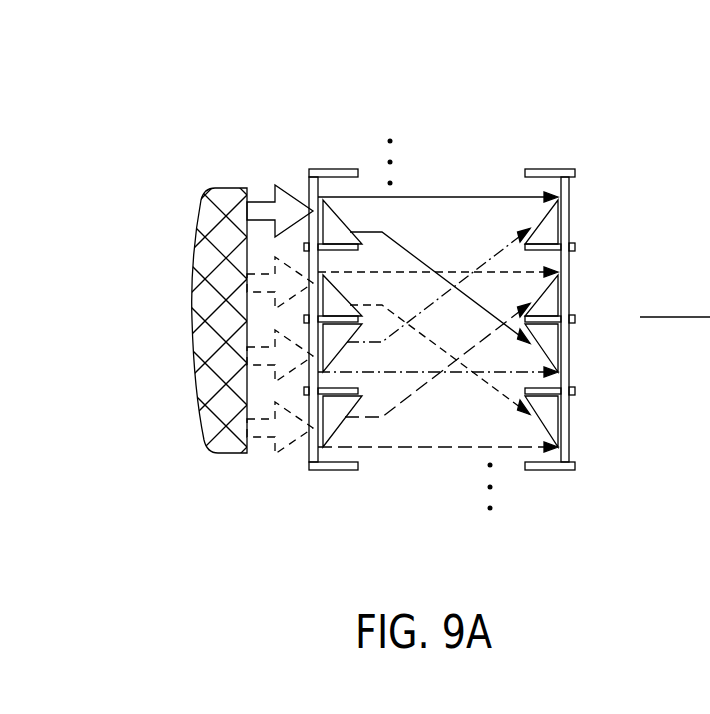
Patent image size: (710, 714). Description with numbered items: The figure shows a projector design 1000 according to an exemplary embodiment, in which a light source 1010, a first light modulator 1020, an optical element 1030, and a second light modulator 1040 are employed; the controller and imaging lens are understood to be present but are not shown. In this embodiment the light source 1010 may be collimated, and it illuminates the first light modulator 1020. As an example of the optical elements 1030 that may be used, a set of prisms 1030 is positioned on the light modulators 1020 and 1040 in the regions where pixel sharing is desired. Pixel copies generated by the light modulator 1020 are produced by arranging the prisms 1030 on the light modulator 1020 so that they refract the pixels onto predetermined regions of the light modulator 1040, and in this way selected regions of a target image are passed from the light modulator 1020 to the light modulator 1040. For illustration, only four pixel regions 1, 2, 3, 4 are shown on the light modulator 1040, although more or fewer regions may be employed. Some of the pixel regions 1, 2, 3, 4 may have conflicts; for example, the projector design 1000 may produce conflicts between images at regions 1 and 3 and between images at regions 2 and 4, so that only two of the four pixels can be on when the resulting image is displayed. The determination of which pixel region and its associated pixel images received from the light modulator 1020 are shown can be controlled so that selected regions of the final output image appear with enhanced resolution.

The projector design 1000 is at (508, 82).
The light source 1010 is at (234, 188).
The first light modulator 1020 is at (327, 170).
The optical element 1030 is at (337, 416).
The second light modulator 1040 is at (545, 170).
The pixel region 1 is at (453, 208).
The pixel region 2 is at (452, 283).
The pixel region 3 is at (452, 360).
The pixel region 4 is at (452, 435).